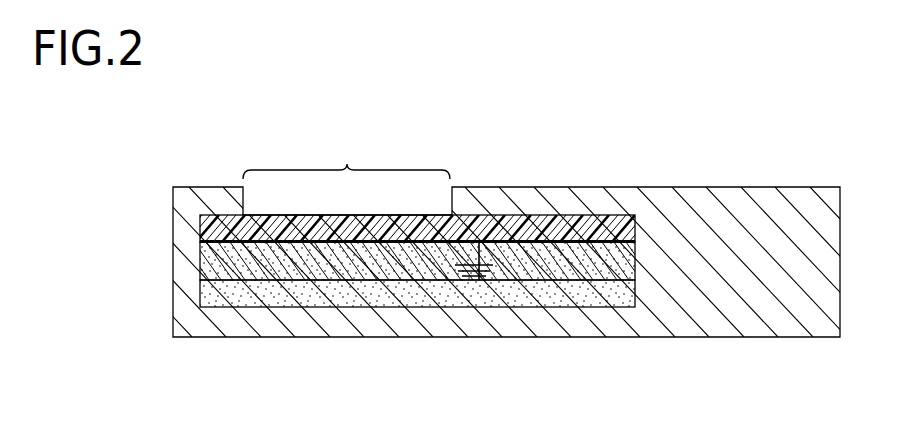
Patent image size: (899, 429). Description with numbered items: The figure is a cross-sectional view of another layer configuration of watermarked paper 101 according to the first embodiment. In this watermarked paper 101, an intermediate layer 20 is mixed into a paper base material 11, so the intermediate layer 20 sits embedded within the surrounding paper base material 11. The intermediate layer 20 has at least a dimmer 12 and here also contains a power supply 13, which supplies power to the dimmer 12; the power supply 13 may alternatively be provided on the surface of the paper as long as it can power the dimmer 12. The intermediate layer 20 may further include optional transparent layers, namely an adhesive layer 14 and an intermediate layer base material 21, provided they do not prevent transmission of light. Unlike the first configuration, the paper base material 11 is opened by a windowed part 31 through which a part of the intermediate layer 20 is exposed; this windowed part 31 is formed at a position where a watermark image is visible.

The watermarked paper 101 is at (798, 157).
The paper base material 11 is at (746, 200).
The intermediate layer 20 is at (624, 201).
The intermediate layer base material 21 is at (473, 213).
The windowed part 31 is at (346, 155).
The dimmer 12 is at (292, 257).
The power supply 13 is at (563, 262).
The adhesive layer 14 is at (383, 280).